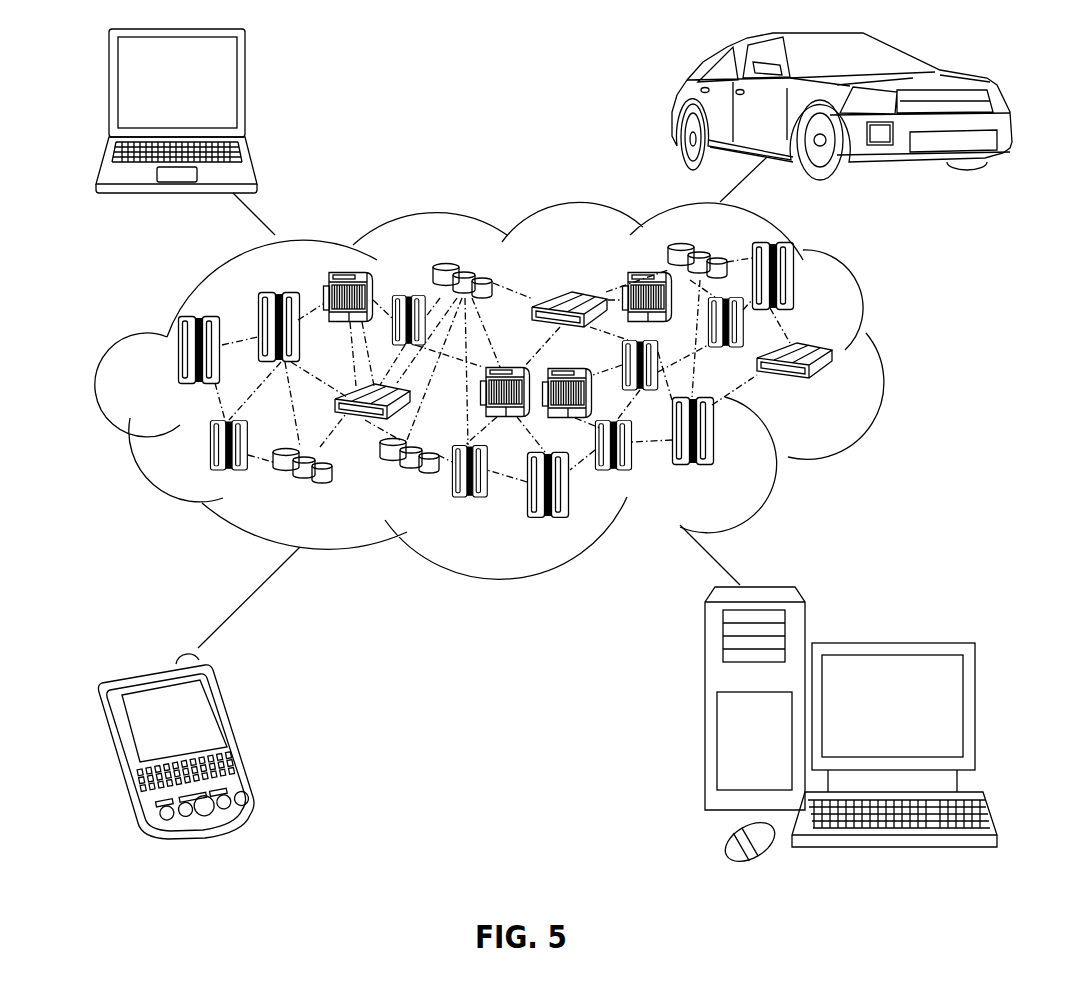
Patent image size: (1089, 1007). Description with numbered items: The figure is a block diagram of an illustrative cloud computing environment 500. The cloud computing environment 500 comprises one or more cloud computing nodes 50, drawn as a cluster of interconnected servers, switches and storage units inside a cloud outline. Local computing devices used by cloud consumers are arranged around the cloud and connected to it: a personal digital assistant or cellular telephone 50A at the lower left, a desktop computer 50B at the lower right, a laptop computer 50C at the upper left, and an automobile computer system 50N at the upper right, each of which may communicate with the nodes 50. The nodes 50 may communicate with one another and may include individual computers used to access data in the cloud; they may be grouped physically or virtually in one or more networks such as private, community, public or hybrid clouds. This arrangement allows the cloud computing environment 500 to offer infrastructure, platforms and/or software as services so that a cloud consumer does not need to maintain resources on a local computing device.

The cloud computing environment 500 is at (892, 358).
The cloud computing nodes 50 is at (833, 388).
The personal digital assistant or cellular telephone 50A is at (237, 730).
The desktop computer 50B is at (890, 642).
The laptop computer 50C is at (245, 92).
The automobile computer system 50N is at (673, 107).